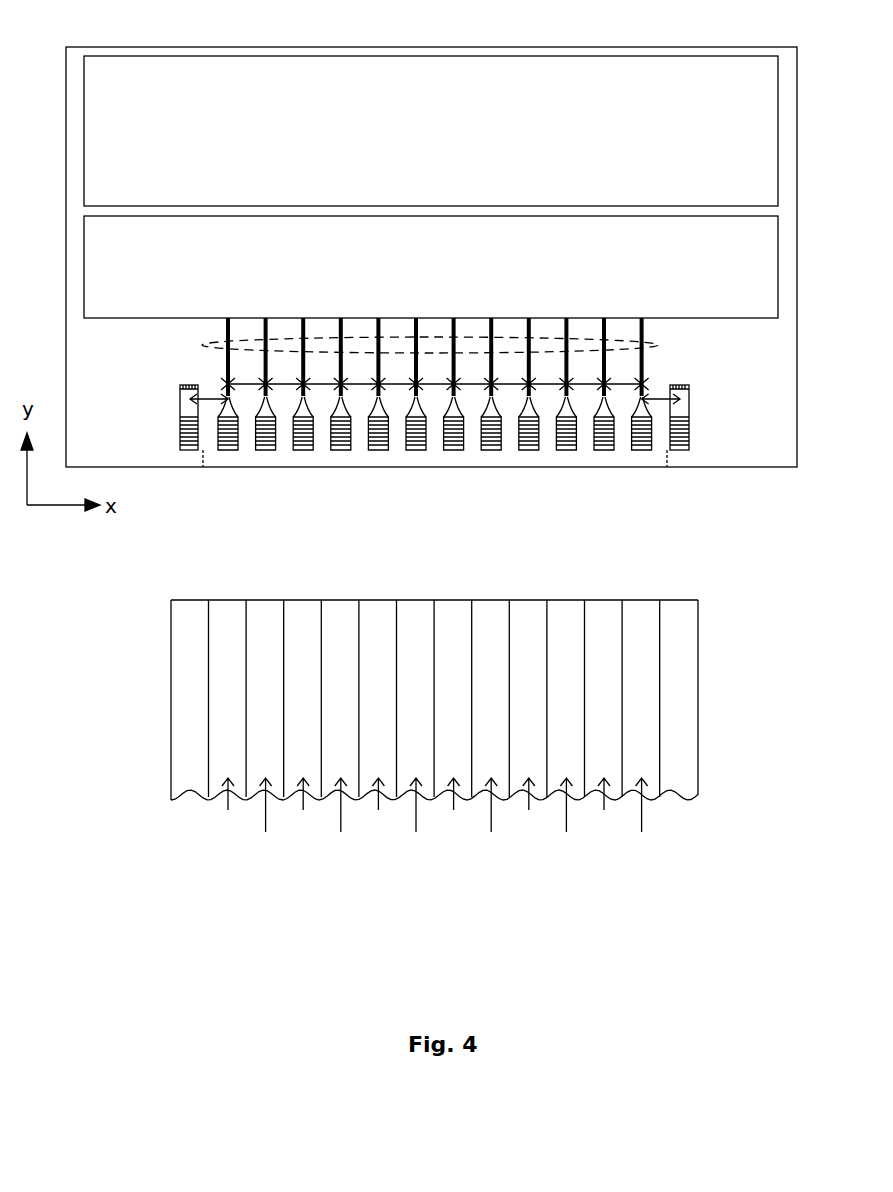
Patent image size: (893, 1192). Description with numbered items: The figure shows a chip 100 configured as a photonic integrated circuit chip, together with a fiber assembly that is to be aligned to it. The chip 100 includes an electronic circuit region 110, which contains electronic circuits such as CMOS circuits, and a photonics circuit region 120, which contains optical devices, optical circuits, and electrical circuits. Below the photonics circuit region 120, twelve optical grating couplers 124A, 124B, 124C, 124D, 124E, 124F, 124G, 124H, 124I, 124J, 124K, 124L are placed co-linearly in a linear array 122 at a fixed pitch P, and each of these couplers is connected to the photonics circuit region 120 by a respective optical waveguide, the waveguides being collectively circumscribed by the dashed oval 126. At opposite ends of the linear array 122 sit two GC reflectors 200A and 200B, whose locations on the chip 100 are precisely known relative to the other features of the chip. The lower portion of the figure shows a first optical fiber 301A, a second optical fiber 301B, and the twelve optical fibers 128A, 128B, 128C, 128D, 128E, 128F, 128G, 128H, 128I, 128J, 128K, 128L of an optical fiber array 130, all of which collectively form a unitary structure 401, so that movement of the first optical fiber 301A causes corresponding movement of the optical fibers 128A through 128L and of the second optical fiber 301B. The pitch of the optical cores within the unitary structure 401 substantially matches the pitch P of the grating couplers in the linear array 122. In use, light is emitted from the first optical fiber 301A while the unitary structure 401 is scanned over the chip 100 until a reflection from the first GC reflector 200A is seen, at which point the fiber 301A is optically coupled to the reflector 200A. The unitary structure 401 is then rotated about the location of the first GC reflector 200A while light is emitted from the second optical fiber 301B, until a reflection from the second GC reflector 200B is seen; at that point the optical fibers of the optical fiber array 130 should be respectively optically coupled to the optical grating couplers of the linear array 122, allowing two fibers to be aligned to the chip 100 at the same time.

The chip 100 is at (572, 47).
The electronic circuit region 110 is at (452, 142).
The photonics circuit region 120 is at (452, 279).
The linear array 122 is at (435, 450).
The optical grating coupler 124A is at (228, 450).
The optical grating coupler 124B is at (266, 450).
The optical grating coupler 124C is at (303, 450).
The optical grating coupler 124D is at (341, 450).
The optical grating coupler 124E is at (378, 450).
The optical grating coupler 124F is at (416, 450).
The optical grating coupler 124G is at (454, 450).
The optical grating coupler 124H is at (491, 450).
The optical grating coupler 124I is at (529, 450).
The optical grating coupler 124J is at (566, 450).
The optical grating coupler 124K is at (604, 450).
The optical grating coupler 124L is at (641, 421).
The dashed oval 126 is at (658, 345).
The optical fiber 128A is at (227, 803).
The optical fiber 128B is at (265, 815).
The optical fiber 128C is at (303, 803).
The optical fiber 128D is at (340, 815).
The optical fiber 128E is at (378, 803).
The optical fiber 128F is at (415, 815).
The optical fiber 128G is at (453, 803).
The optical fiber 128H is at (491, 815).
The optical fiber 128I is at (529, 803).
The optical fiber 128J is at (566, 815).
The optical fiber 128K is at (604, 803).
The optical fiber 128L is at (641, 815).
The optical fiber array 130 is at (434, 850).
The first GC reflector 200A is at (180, 413).
The second GC reflector 200B is at (689, 414).
The first optical fiber 301A is at (192, 716).
The second optical fiber 301B is at (680, 713).
The unitary structure 401 is at (434, 795).